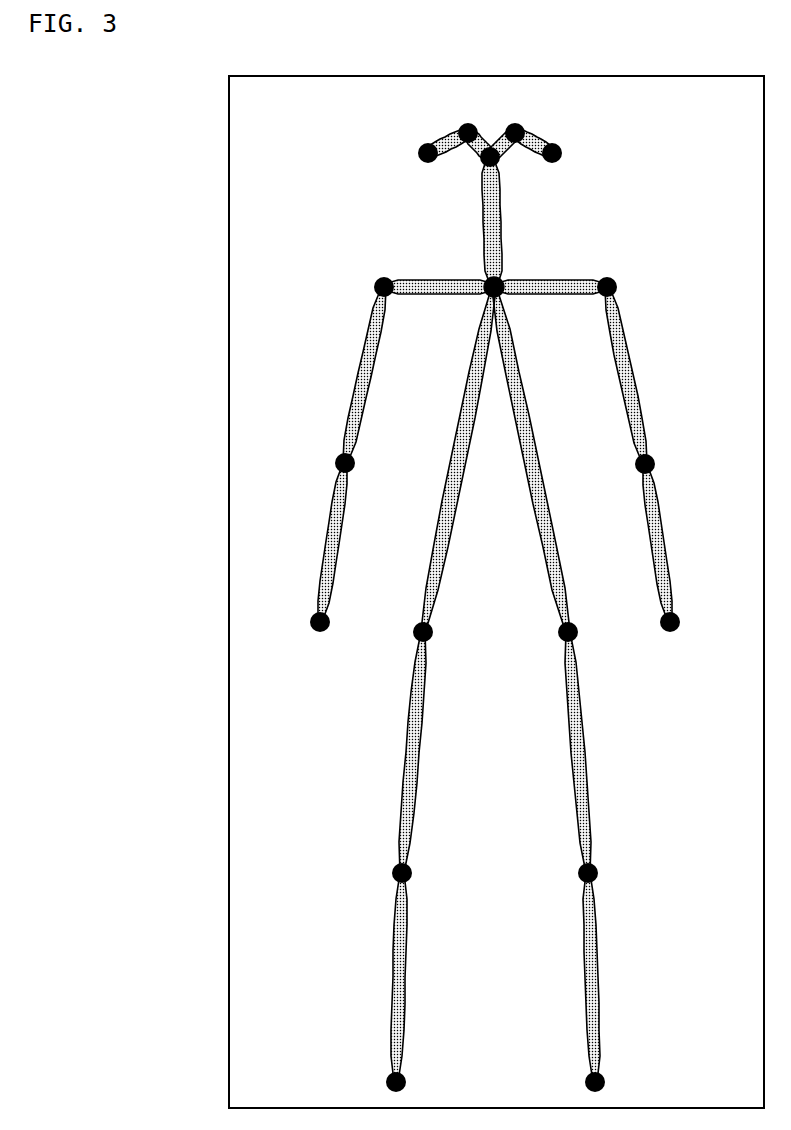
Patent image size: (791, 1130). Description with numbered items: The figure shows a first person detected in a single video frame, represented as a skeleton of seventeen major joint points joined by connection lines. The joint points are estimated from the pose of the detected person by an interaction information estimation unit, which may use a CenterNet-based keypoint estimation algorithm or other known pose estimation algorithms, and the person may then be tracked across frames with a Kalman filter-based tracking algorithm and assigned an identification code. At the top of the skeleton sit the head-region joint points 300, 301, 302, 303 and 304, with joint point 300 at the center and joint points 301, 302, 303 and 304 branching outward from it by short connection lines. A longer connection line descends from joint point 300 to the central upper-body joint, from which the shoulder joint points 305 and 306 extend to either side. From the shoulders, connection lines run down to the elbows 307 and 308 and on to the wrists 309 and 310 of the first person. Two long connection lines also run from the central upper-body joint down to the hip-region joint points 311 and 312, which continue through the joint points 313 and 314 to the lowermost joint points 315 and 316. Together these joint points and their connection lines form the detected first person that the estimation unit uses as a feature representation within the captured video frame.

The major joint point 300 is at (514, 173).
The major joint point 301 is at (458, 117).
The major joint point 302 is at (525, 117).
The major joint point 303 is at (405, 161).
The major joint point 304 is at (577, 161).
The major joint point 305 is at (360, 286).
The major joint point 306 is at (627, 286).
The elbow 307 is at (321, 465).
The elbow 308 is at (669, 465).
The wrist 309 is at (295, 623).
The wrist 310 is at (694, 620).
The major joint point 311 is at (399, 632).
The major joint point 312 is at (592, 633).
The major joint point 313 is at (377, 875).
The major joint point 314 is at (609, 875).
The major joint point 315 is at (371, 1082).
The major joint point 316 is at (617, 1082).